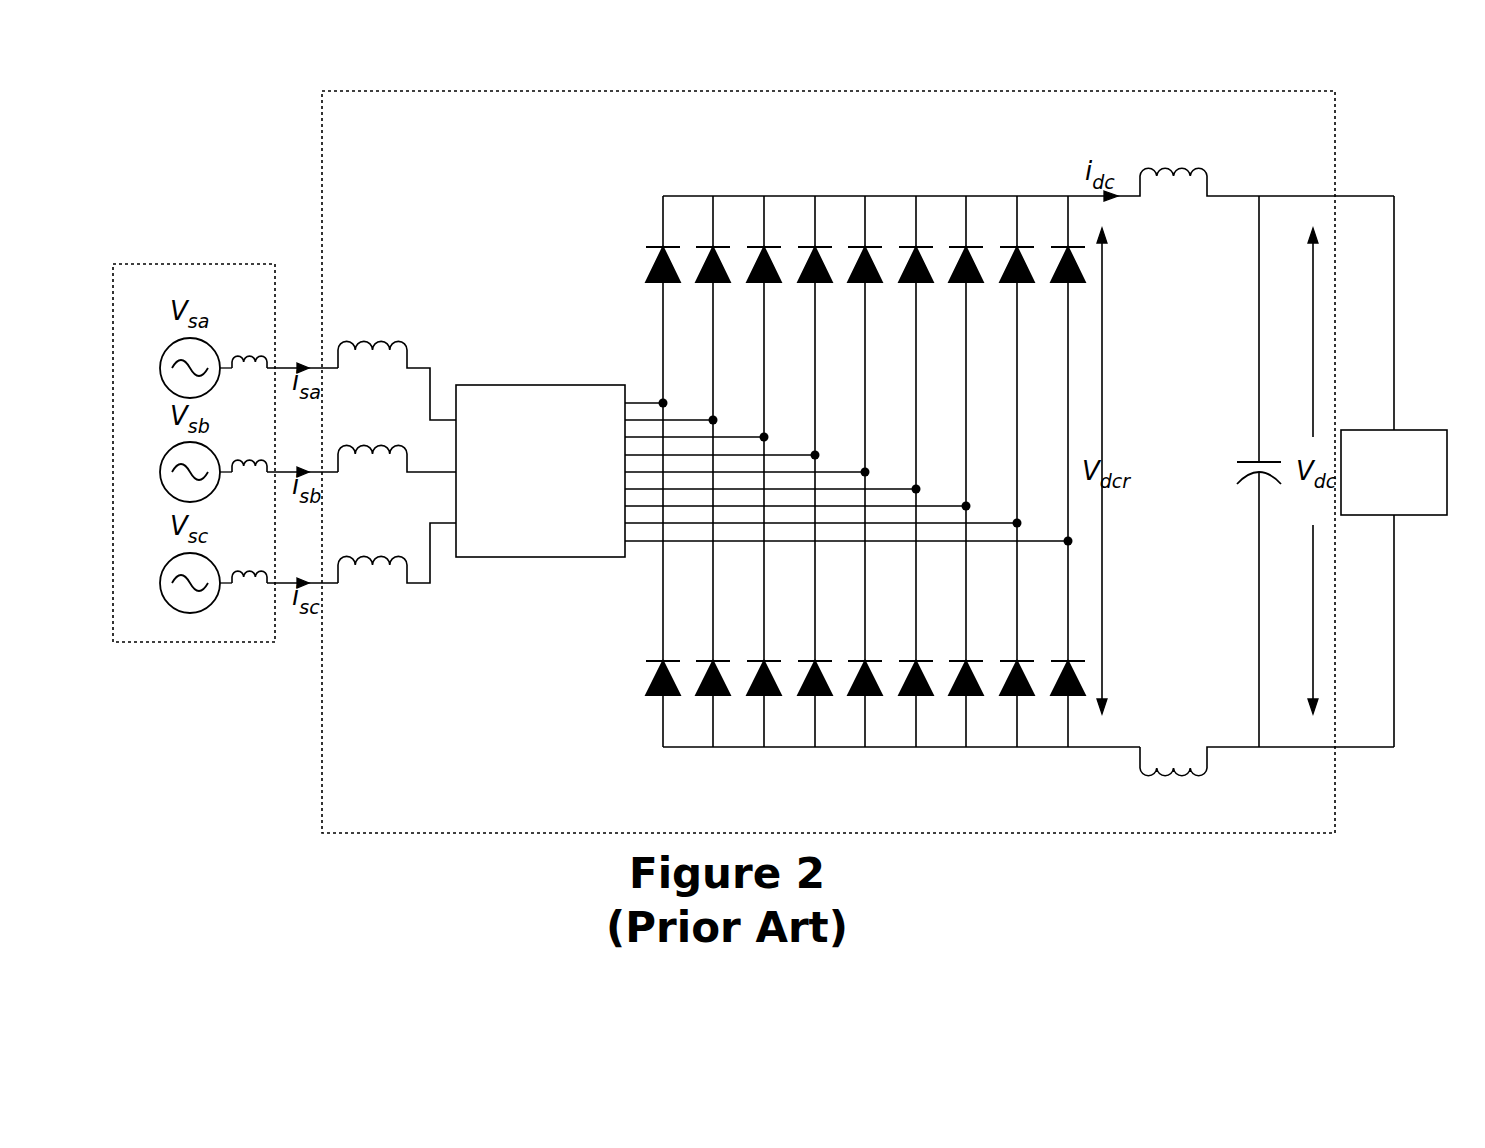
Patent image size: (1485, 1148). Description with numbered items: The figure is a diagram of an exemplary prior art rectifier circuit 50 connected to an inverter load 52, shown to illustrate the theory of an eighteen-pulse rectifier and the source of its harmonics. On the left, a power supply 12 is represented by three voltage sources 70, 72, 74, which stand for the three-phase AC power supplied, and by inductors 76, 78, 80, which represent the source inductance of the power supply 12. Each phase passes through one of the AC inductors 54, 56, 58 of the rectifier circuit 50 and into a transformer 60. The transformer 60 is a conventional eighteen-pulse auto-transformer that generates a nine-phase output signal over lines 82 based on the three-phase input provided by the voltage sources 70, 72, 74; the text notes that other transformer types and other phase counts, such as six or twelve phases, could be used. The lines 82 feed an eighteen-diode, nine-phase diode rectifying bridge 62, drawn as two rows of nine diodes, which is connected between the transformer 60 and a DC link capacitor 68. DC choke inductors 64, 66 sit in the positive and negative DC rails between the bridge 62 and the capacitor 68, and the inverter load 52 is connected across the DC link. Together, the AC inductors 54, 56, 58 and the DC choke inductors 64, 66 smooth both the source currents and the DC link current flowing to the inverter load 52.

The rectifier circuit 50 is at (322, 172).
The power supply 12 is at (207, 263).
The voltage source 70 is at (158, 368).
The voltage source 72 is at (158, 472).
The voltage source 74 is at (158, 583).
The inductor 76 is at (250, 352).
The inductor 78 is at (250, 457).
The inductor 80 is at (250, 568).
The AC inductor 54 is at (380, 341).
The AC inductor 56 is at (380, 444).
The AC inductor 58 is at (380, 556).
The transformer 60 is at (540, 471).
The lines 82 is at (639, 565).
The diode rectifying bridge 62 is at (614, 294).
The DC choke inductor 64 is at (1165, 168).
The DC choke inductor 66 is at (1167, 777).
The DC link capacitor 68 is at (1252, 461).
The inverter load 52 is at (1394, 472).